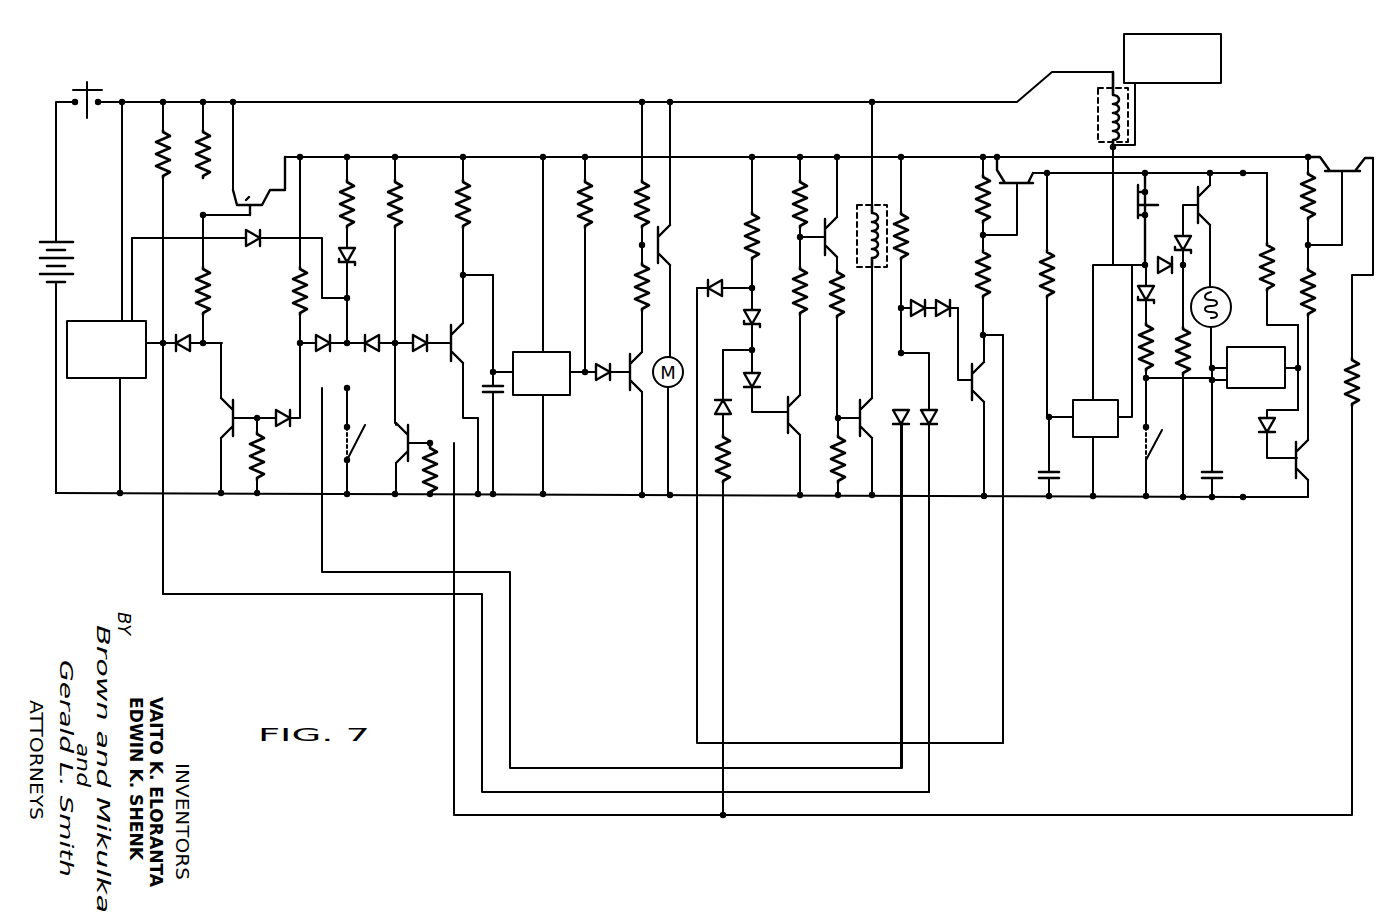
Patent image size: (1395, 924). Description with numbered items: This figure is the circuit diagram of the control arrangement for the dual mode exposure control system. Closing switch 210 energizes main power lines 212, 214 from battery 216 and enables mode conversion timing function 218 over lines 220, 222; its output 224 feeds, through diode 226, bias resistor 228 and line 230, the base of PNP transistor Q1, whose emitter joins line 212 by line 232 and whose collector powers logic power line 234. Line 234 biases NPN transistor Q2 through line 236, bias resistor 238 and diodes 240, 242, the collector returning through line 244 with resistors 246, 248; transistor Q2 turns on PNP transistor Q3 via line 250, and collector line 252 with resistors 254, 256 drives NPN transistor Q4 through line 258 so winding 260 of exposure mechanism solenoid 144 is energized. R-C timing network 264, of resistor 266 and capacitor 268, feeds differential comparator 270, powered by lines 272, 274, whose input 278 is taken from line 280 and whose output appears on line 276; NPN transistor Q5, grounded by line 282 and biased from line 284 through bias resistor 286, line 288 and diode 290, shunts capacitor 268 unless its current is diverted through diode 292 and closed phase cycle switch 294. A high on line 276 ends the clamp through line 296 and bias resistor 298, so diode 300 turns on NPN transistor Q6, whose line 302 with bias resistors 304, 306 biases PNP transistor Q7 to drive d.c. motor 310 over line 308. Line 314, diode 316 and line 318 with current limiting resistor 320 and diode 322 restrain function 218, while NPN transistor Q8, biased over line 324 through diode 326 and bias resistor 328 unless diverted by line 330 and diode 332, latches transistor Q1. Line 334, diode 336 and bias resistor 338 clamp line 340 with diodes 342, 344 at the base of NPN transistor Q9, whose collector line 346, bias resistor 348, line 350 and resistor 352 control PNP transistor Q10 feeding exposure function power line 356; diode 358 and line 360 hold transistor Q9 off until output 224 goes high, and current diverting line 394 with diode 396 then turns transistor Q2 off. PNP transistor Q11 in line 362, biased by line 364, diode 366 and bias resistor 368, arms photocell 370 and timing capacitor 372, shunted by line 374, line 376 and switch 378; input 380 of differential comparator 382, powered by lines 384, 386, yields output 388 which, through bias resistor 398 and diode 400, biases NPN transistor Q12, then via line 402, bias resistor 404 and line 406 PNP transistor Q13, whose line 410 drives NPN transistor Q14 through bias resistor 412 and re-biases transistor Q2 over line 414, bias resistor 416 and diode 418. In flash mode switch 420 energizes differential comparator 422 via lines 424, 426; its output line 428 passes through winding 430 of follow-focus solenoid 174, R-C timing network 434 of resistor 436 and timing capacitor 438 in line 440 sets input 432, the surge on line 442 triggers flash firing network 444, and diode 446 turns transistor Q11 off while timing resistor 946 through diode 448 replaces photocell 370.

The exposure mechanism solenoid 144 is at (878, 210).
The follow-focus solenoid 174 is at (1130, 120).
The switch 210 is at (85, 89).
The main power line 212 is at (448, 102).
The main power line 214 is at (84, 505).
The battery 216 is at (59, 242).
The mode conversion timing function 218 is at (107, 319).
The line 220 is at (120, 422).
The line 222 is at (122, 244).
The output 224 is at (148, 354).
The diode 226 is at (192, 358).
The bias resistor 228 is at (207, 309).
The line 230 is at (246, 218).
The line 232 is at (237, 133).
The logic power line 234 is at (427, 156).
The line 236 is at (750, 189).
The bias resistor 238 is at (750, 250).
The diode 240 is at (750, 323).
The diode 242 is at (775, 370).
The line 244 is at (803, 237).
The resistor 246 is at (798, 272).
The resistor 248 is at (798, 176).
The line 250 is at (818, 229).
The line 252 is at (834, 362).
The resistor 254 is at (840, 333).
The resistor 256 is at (834, 482).
The line 258 is at (838, 402).
The winding 260 is at (855, 210).
The R-C timing network 264 is at (518, 263).
The resistor 266 is at (464, 207).
The capacitor 268 is at (501, 400).
The differential comparator 270 is at (550, 340).
The line 272 is at (543, 267).
The line 274 is at (553, 418).
The output line 276 is at (580, 378).
The input line 278 is at (499, 358).
The line 280 is at (494, 300).
The line 282 is at (463, 400).
The line 284 is at (395, 267).
The bias resistor 286 is at (397, 204).
The line 288 is at (413, 333).
The diode 290 is at (415, 383).
The diode 292 is at (366, 332).
The phase cycle switch 294 is at (362, 453).
The line 296 is at (589, 278).
The bias resistor 298 is at (588, 196).
The diode 300 is at (607, 366).
The line 302 is at (639, 157).
The bias resistor 304 is at (640, 301).
The bias resistor 306 is at (640, 208).
The line 308 is at (751, 311).
The d.c. motor 310 is at (667, 356).
The line 314 is at (132, 238).
The diode 316 is at (256, 233).
The line 318 is at (350, 296).
The current limiting resistor 320 is at (349, 186).
The diode 322 is at (357, 258).
The line 324 is at (298, 372).
The diode 326 is at (283, 426).
The bias resistor 328 is at (295, 301).
The line 330 is at (306, 341).
The diode 332 is at (327, 358).
The line 334 is at (322, 528).
The diode 336 is at (898, 404).
The bias resistor 338 is at (903, 242).
The line 340 is at (958, 333).
The diode 342 is at (914, 300).
The diode 344 is at (951, 299).
The line 346 is at (989, 310).
The bias resistor 348 is at (990, 262).
The line 350 is at (1020, 228).
The resistor 352 is at (980, 202).
The exposure function power line 356 is at (1132, 173).
The diode 358 is at (932, 418).
The line 360 is at (418, 594).
The line 362 is at (1230, 256).
The line 364 is at (1164, 437).
The diode 366 is at (1183, 240).
The bias resistor 368 is at (1200, 354).
The photocell 370 is at (1220, 296).
The timing capacitor 372 is at (1226, 471).
The line 374 is at (1160, 362).
The line 376 is at (1146, 481).
The switch 378 is at (1164, 455).
The input 380 is at (1198, 420).
The differential comparator 382 is at (1292, 352).
The line 384 is at (1290, 186).
The line 386 is at (1243, 481).
The output 388 is at (1299, 366).
The current diverting line 394 is at (695, 534).
The diode 396 is at (708, 286).
The bias resistor 398 is at (1279, 257).
The diode 400 is at (1265, 423).
The line 402 is at (1351, 400).
The bias resistor 404 is at (1312, 316).
The line 406 is at (1331, 235).
The line 410 is at (454, 540).
The bias resistor 412 is at (1336, 382).
The line 414 is at (726, 630).
The bias resistor 416 is at (726, 460).
The diode 418 is at (730, 408).
The switch 420 is at (1150, 198).
The differential comparator 422 is at (1063, 469).
The line 424 is at (1112, 263).
The line 426 is at (1104, 438).
The line 428 is at (1122, 404).
The winding 430 is at (1090, 112).
The input 432 is at (1050, 415).
The R-C timing network 434 is at (1075, 317).
The resistor 436 is at (1050, 255).
The timing capacitor 438 is at (1044, 472).
The line 440 is at (1044, 340).
The line 442 is at (1136, 100).
The flash firing network 444 is at (1222, 56).
The diode 446 is at (1165, 263).
The diode 448 is at (1171, 381).
The timing resistor 946 is at (1130, 326).
The PNP transistor Q1 is at (259, 186).
The NPN transistor Q2 is at (803, 405).
The PNP transistor Q3 is at (839, 243).
The NPN transistor Q4 is at (874, 381).
The NPN transistor Q5 is at (466, 319).
The NPN transistor Q6 is at (643, 423).
The PNP transistor Q7 is at (672, 290).
The NPN transistor Q8 is at (229, 418).
The NPN transistor Q9 is at (985, 415).
The PNP transistor Q10 is at (1015, 170).
The PNP transistor Q11 is at (1216, 199).
The NPN transistor Q12 is at (1314, 406).
The PNP transistor Q13 is at (1340, 154).
The NPN transistor Q14 is at (405, 458).